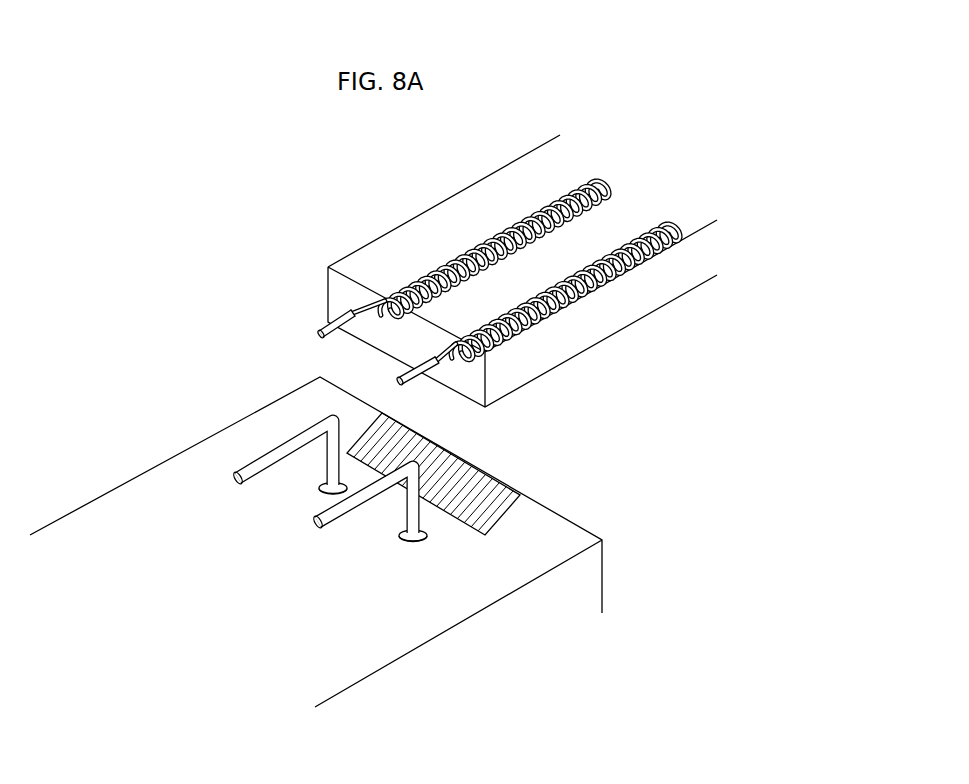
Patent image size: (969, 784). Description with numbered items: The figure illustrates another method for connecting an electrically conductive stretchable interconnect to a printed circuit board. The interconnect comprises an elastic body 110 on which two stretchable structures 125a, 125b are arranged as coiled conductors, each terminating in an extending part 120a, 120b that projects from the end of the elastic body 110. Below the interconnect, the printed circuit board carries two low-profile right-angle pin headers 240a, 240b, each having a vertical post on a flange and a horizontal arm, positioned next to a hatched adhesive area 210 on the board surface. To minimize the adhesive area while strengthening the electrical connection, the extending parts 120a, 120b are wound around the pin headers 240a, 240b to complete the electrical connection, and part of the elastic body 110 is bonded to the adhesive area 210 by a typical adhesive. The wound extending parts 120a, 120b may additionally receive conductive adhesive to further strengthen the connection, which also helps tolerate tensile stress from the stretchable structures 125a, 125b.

The elastic body 110 is at (442, 191).
The extending part 120a is at (322, 330).
The extending part 120b is at (415, 384).
The stretchable structure 125a is at (598, 181).
The stretchable structure 125b is at (676, 227).
The adhesive area 210 is at (524, 494).
The pin header 240a is at (253, 472).
The pin header 240b is at (333, 519).